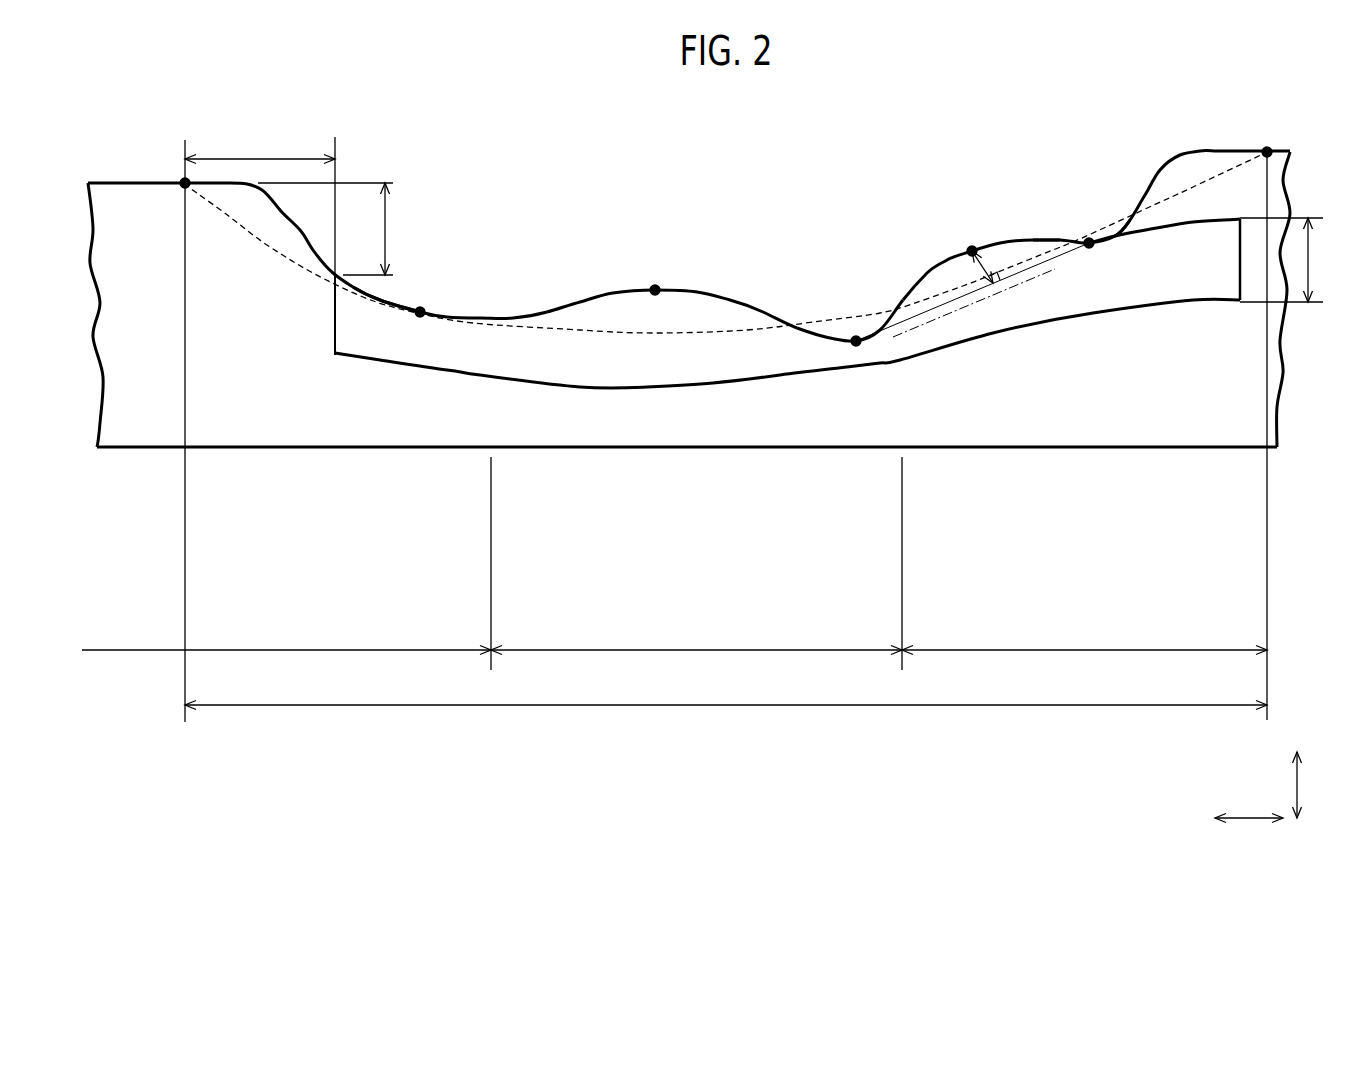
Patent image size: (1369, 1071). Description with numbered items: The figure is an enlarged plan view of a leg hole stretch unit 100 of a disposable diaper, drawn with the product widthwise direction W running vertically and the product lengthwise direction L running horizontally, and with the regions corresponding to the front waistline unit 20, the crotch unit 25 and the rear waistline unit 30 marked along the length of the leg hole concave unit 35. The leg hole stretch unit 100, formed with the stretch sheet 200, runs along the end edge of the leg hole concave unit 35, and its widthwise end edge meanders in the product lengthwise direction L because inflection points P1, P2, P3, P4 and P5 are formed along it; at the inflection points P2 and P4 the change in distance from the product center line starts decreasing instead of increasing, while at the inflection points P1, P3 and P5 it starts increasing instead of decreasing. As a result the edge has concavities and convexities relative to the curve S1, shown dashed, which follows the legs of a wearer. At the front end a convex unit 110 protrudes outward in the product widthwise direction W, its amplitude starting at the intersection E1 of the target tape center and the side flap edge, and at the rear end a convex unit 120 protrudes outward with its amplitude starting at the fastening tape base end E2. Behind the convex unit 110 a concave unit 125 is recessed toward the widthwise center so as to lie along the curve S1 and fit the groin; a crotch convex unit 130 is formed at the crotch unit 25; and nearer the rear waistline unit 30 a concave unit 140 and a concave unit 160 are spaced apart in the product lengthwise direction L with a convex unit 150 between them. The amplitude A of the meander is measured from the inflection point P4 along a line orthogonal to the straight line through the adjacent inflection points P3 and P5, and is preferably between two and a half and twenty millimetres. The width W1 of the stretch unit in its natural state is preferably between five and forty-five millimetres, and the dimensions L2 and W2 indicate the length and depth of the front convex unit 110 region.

The leg hole stretch unit 100 is at (708, 253).
The convex unit 110 is at (262, 192).
The convex unit 120 is at (1177, 150).
The concave unit 125 is at (398, 302).
The crotch convex unit 130 is at (655, 283).
The concave unit 140 is at (857, 327).
The convex unit 150 is at (972, 247).
The concave unit 160 is at (1108, 233).
The stretch sheet 200 is at (1193, 303).
The curve S1 is at (272, 248).
The amplitude A is at (992, 250).
The intersection E1 is at (183, 185).
The base end of the fastening tape E2 is at (1265, 154).
The inflection point P1 is at (420, 314).
The inflection point P2 is at (655, 292).
The inflection point P3 is at (856, 343).
The inflection point P4 is at (972, 253).
The inflection point P5 is at (1089, 245).
The length L2 is at (260, 428).
The width W2 is at (337, 229).
The width W1 is at (1323, 262).
The front waistline unit 20 is at (286, 635).
The crotch unit 25 is at (696, 635).
The rear waistline unit 30 is at (1084, 635).
The leg hole concave unit 35 is at (726, 690).
The product widthwise direction W is at (1310, 785).
The product lengthwise direction L is at (1249, 832).